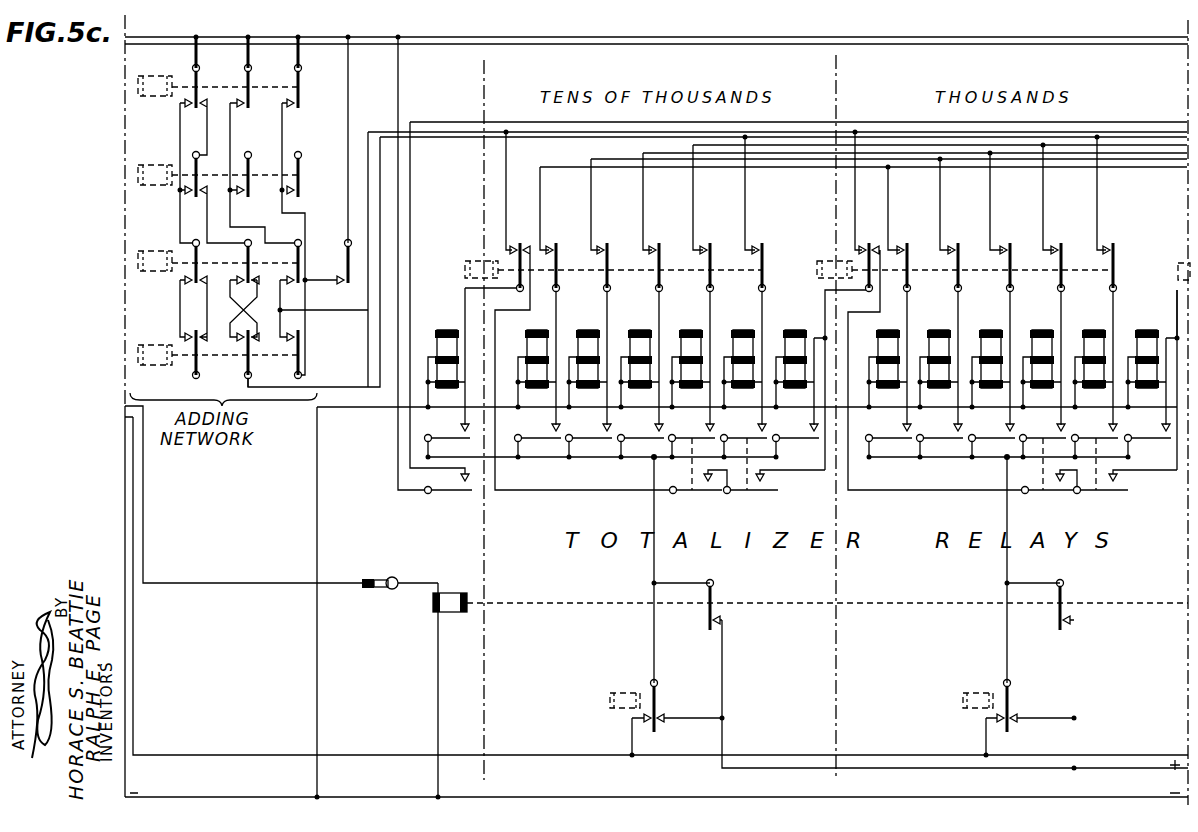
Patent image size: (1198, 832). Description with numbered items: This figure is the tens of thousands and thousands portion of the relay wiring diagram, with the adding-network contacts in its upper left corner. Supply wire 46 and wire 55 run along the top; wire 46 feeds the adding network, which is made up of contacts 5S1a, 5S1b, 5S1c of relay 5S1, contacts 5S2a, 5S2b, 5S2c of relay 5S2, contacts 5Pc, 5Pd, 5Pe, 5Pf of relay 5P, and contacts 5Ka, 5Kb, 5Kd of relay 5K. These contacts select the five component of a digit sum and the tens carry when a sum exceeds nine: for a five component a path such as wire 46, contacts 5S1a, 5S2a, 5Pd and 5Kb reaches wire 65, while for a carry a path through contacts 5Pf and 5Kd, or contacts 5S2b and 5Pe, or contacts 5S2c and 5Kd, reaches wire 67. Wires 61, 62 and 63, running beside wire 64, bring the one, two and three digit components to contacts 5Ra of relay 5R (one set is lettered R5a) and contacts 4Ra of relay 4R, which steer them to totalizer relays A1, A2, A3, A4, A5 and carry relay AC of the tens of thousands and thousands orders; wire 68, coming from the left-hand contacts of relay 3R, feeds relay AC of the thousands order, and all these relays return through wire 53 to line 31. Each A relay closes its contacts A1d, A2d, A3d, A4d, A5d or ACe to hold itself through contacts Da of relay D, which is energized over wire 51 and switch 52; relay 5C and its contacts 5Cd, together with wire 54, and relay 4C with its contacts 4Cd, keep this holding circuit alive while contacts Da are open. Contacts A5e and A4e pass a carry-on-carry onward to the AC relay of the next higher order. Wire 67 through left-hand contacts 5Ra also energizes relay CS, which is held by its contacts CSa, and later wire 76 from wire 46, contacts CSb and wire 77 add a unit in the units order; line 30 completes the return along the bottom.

The wire 46 is at (622, 37).
The wire 55 is at (712, 45).
The wire 76 is at (400, 88).
The wire 67 is at (368, 130).
The wire 77 is at (412, 162).
The wire 65 is at (344, 387).
The conductor 64 is at (804, 145).
The wire 63 is at (817, 153).
The wire 62 is at (801, 159).
The wire 61 is at (768, 168).
The wire 68 is at (1177, 292).
The wire 51 is at (145, 478).
The switch 52 is at (378, 590).
The wire 53 is at (316, 660).
The wire 54 is at (213, 755).
The line 31 is at (508, 797).
The line 30 is at (738, 768).
The contacts of relay 5S1 5S1a is at (190, 86).
The contact of relay 5S1 5S1b is at (238, 98).
The contact of relay 5S1 5S1c is at (290, 98).
The relay 5S1 is at (218, 99).
The contacts of relay 5S2 5S2a is at (190, 176).
The relay 5S2 is at (218, 188).
The contacts of relay 5S2 5S2b is at (239, 193).
The contacts of relay 5S2 5S2c is at (288, 192).
The relay 5P is at (157, 254).
The contacts of relay 5P 5Pc is at (188, 272).
The contacts of relay 5P 5Pd is at (238, 277).
The contacts of relay 5P 5Pe is at (289, 278).
The contacts of relay 5P 5Pf is at (342, 278).
The contacts of relay 5K 5Ka is at (186, 332).
The relay 5K is at (158, 347).
The contacts of relay 5K 5Kb is at (228, 358).
The contacts of relay 5K 5Kd is at (300, 334).
The relay 5R is at (478, 259).
The contact of relay 5R R5a is at (515, 246).
The contacts of relay 5R 5Ra is at (648, 246).
The relay 4R is at (826, 259).
The contacts of relay 4R 4Ra is at (866, 246).
The relay 3R is at (1180, 261).
The relay CS is at (437, 345).
The contacts of relay CS CSa is at (461, 430).
The contacts of relay CS CSb is at (468, 494).
The relay A1 is at (528, 345).
The relay A2 is at (579, 345).
The relay A3 is at (631, 345).
The relay A4 is at (682, 345).
The relay A5 is at (734, 345).
The carry relay AC is at (786, 345).
The contacts of relay A1 A1d is at (707, 438).
The contacts of relay A2 A2d is at (758, 438).
The contacts of relay A3 A3d is at (810, 438).
The contacts of relay A4 A4d is at (861, 453).
The contacts of relay A5 A5d is at (913, 453).
The contact of relay AC ACe is at (965, 438).
The contacts of relay A4 A4e is at (702, 492).
The contacts of relay A5 A5e is at (762, 494).
The relay D is at (451, 596).
The contacts of relay D Da is at (719, 619).
The relay 5C is at (635, 694).
The contacts of relay 5C 5Cd is at (660, 716).
The relay 4C is at (988, 694).
The contact of relay 4C 4Cd is at (1012, 716).